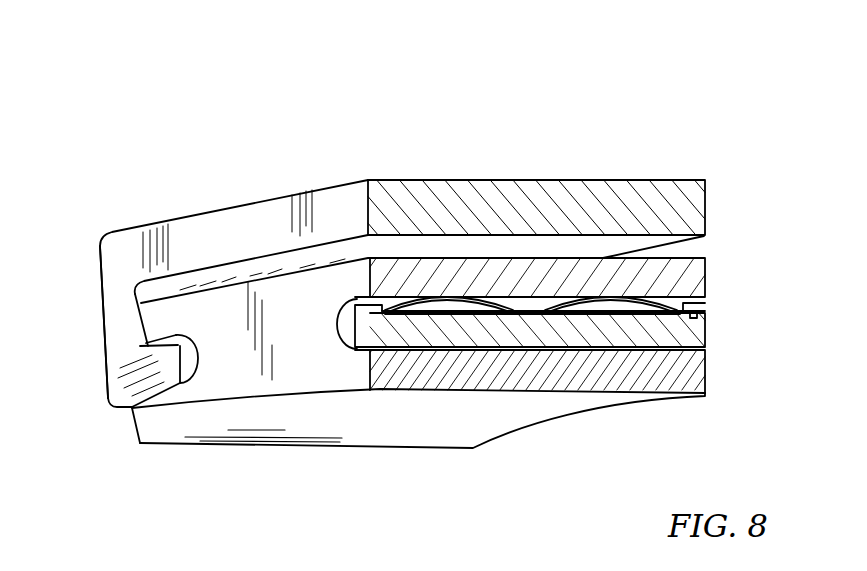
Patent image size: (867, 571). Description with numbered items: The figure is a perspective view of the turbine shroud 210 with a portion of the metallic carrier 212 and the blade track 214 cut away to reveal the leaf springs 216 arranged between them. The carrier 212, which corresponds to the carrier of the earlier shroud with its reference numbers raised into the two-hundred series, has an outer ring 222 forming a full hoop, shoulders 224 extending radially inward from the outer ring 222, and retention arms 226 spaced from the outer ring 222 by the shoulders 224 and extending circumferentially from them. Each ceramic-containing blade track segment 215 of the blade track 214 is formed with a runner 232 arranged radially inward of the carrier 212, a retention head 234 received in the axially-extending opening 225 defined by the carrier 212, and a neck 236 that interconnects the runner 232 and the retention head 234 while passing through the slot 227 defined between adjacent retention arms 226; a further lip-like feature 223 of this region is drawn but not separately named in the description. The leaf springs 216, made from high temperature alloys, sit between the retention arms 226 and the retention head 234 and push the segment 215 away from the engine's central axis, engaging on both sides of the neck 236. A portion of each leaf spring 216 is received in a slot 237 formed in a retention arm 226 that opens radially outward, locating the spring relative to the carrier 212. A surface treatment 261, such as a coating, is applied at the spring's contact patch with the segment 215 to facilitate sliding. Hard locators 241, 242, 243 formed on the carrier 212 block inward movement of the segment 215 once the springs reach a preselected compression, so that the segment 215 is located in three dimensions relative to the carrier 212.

The turbine shroud 210 is at (600, 98).
The carrier 212 is at (364, 170).
The blade track 214 is at (259, 456).
The blade track segment 215 is at (347, 438).
The leaf spring 216 is at (504, 291).
The outer ring 222 is at (268, 228).
The lip end 223 is at (179, 364).
The shoulder 224 is at (124, 295).
The axially-extending opening 225 is at (200, 278).
The retention arm 226 is at (115, 397).
The slot 227 is at (179, 353).
The runner 232 is at (150, 421).
The retention head 234 is at (193, 300).
The neck 236 is at (217, 382).
The slot 237 is at (430, 312).
The hard locator 241 is at (360, 297).
The hard locator 242 is at (709, 302).
The hard locator 243 is at (143, 350).
The surface treatment 261 is at (457, 291).